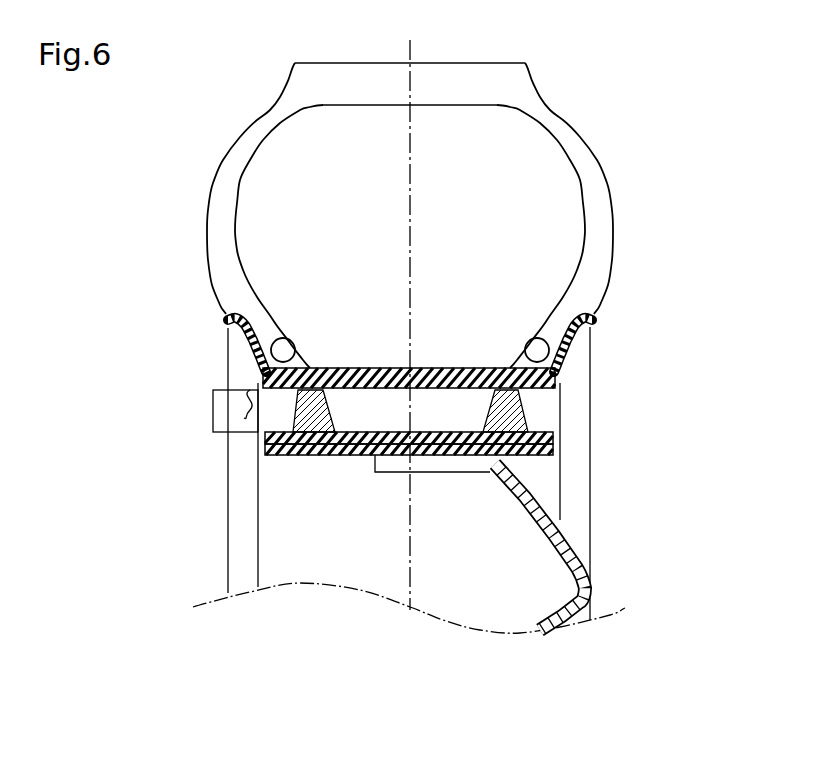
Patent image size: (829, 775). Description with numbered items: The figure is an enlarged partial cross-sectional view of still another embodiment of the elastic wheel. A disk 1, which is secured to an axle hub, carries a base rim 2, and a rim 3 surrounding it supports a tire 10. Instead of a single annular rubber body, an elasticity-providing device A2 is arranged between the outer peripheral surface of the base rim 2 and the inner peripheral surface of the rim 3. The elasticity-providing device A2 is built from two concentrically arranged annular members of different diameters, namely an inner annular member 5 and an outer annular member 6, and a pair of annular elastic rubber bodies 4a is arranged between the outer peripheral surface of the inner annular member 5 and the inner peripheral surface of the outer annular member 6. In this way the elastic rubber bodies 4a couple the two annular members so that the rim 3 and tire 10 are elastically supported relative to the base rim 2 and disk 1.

The disk 1 is at (540, 630).
The base rim 2 is at (555, 453).
The rim 3 is at (593, 316).
The annular elastic rubber bodies 4a is at (298, 412).
The inner annular member 5 is at (555, 436).
The outer annular member 6 is at (554, 380).
The tire 10 is at (582, 153).
The elasticity-providing device A2 is at (213, 412).